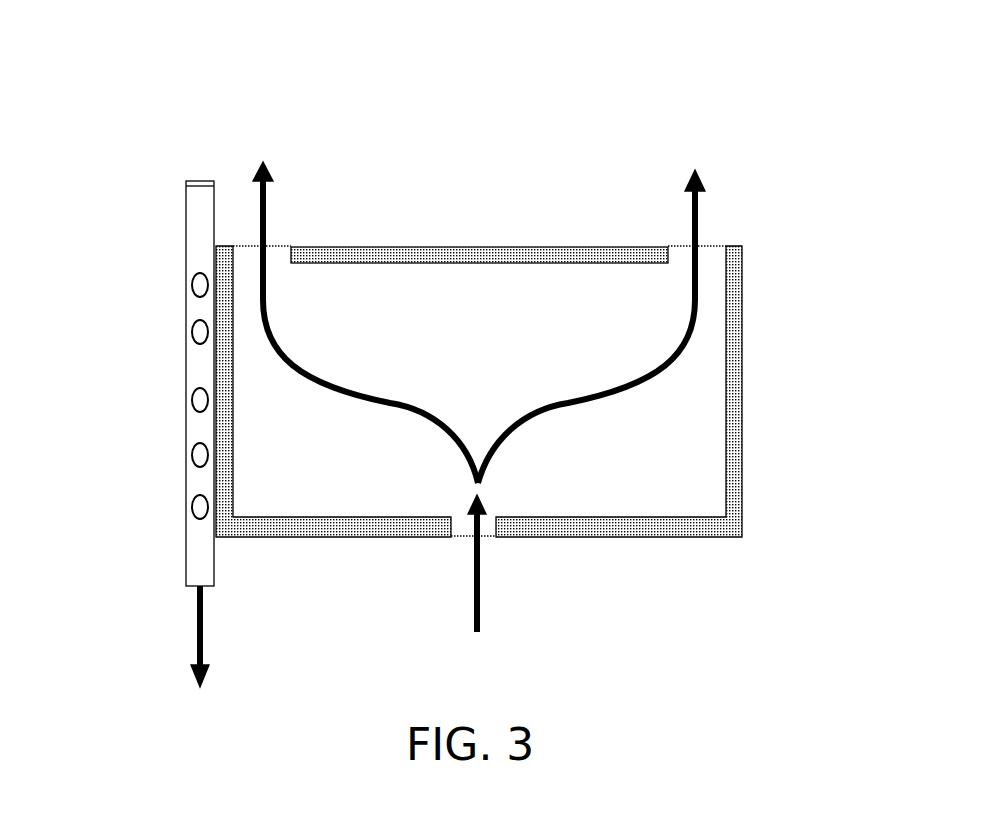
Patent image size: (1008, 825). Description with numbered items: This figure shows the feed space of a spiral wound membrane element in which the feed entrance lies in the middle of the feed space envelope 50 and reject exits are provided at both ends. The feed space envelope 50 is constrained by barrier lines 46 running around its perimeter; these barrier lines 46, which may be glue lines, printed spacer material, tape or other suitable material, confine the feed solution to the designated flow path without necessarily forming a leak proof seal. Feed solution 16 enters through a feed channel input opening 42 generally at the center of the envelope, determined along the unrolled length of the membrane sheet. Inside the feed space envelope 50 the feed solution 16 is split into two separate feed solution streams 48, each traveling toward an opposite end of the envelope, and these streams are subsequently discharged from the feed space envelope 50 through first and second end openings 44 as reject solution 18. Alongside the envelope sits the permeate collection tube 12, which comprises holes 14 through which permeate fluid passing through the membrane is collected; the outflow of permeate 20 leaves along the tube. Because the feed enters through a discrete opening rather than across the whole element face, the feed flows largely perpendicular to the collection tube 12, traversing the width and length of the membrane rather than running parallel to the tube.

The permeate collection tube 12 is at (186, 531).
The holes 14 is at (200, 285).
The feed solution 16 is at (473, 565).
The reject solution 18 is at (262, 190).
The drain outflow 20 is at (198, 636).
The feed channel input opening 42 is at (488, 525).
The feed reject exit opening 44 is at (278, 247).
The barrier lines 46 is at (405, 253).
The feed solution streams 48 is at (583, 400).
The feed space envelope 50 is at (482, 315).